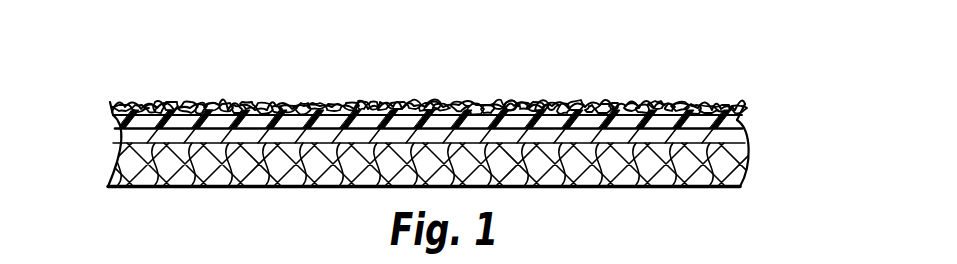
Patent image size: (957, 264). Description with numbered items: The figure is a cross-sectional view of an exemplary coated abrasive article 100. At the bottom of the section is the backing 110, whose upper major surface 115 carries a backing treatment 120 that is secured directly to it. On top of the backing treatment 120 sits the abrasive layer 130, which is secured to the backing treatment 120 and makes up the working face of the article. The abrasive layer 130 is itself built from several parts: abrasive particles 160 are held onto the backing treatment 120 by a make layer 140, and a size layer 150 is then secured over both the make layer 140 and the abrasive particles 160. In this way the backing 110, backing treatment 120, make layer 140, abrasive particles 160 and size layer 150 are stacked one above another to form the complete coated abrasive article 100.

The coated abrasive article 100 is at (662, 53).
The backing 110 is at (740, 170).
The major surface 115 is at (748, 157).
The backing treatment 120 is at (737, 131).
The abrasive layer 130 is at (99, 99).
The make layer 140 is at (733, 123).
The size layer 150 is at (430, 102).
The abrasive particles 160 is at (541, 103).